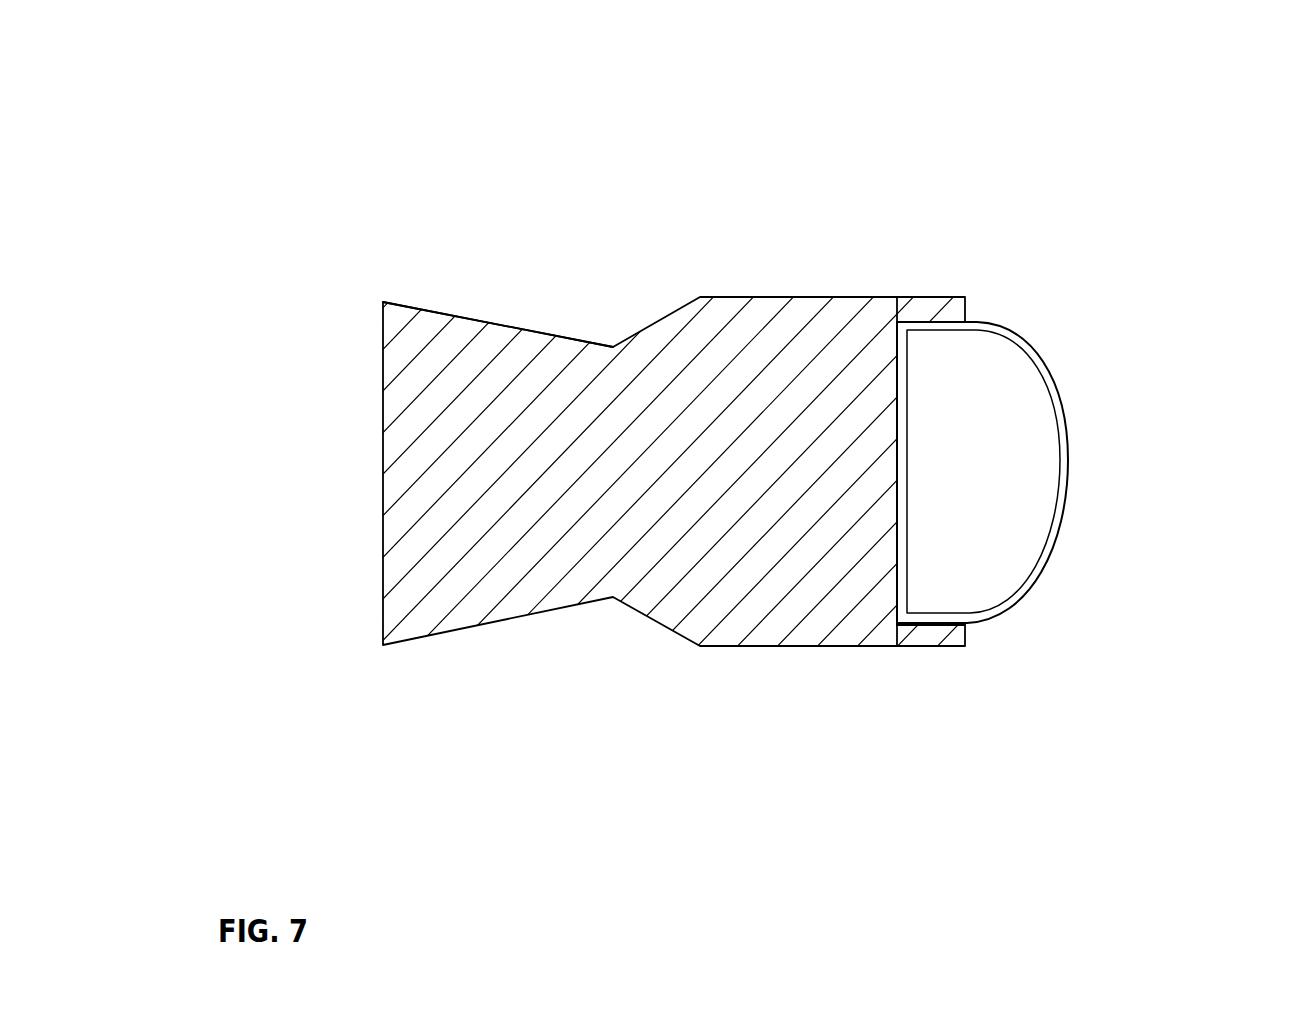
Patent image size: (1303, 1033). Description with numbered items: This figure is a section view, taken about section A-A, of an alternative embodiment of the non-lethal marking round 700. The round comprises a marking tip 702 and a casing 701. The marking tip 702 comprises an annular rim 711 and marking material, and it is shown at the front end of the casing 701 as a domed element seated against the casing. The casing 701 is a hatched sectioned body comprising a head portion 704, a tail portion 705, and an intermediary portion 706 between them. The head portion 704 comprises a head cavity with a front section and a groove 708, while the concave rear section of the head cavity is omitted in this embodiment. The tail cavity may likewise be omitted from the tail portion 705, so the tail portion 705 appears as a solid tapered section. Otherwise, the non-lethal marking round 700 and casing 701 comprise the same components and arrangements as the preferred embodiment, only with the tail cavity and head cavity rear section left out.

The non-lethal marking round 700 is at (1073, 267).
The casing 701 is at (990, 693).
The marking tip 702 is at (1072, 472).
The head portion 704 is at (945, 637).
The tail portion 705 is at (383, 477).
The intermediary portion 706 is at (653, 320).
The groove 708 is at (897, 322).
The annular rim 711 is at (898, 614).